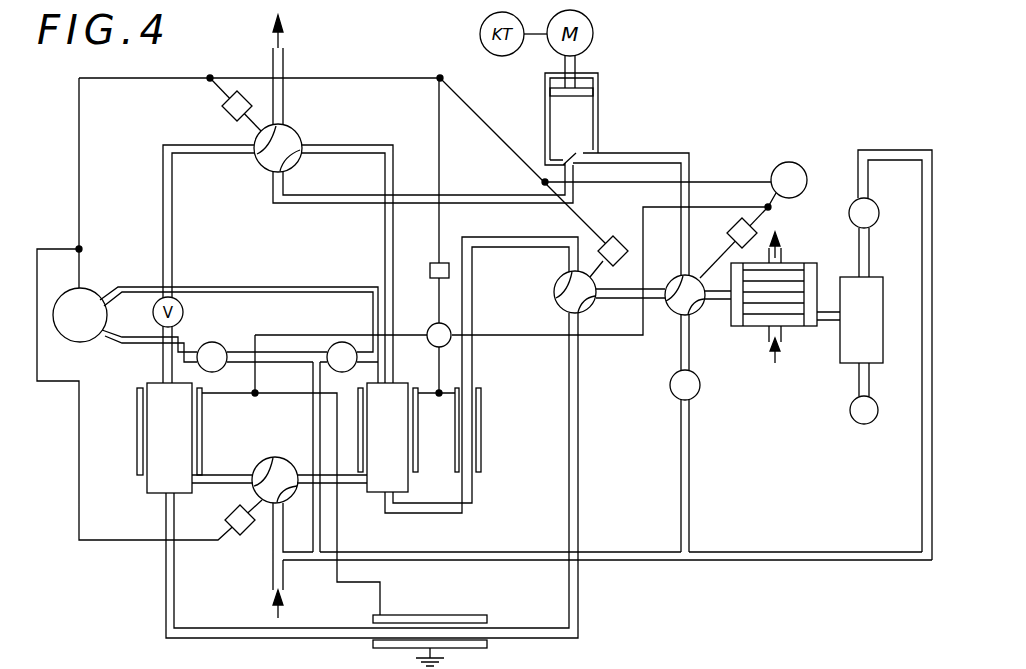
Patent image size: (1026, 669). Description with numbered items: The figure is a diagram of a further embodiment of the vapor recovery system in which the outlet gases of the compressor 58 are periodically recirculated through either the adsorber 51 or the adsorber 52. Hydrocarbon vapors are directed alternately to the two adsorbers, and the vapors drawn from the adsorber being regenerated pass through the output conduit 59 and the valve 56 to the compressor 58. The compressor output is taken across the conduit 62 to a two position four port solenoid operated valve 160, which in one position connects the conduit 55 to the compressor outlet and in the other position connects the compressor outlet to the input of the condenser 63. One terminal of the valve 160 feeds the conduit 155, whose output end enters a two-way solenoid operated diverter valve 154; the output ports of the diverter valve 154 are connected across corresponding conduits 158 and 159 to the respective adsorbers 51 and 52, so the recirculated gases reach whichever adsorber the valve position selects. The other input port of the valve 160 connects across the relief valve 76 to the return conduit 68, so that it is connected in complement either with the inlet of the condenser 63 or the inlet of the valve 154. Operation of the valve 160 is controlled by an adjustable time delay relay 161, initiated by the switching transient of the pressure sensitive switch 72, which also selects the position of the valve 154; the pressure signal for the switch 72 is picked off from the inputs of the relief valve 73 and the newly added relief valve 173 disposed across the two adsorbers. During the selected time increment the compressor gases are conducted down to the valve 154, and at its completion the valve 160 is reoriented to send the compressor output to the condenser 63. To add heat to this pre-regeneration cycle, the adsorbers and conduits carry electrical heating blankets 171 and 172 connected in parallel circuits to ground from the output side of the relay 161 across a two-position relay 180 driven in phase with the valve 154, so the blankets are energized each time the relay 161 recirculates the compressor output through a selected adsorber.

The adsorber 51 is at (148, 489).
The adsorber 52 is at (409, 487).
The conduit 55 is at (287, 98).
The valve 56 is at (262, 166).
The compressor 58 is at (600, 106).
The output conduit 59 is at (333, 206).
The conduit 62 is at (656, 152).
The condenser 63 is at (800, 327).
The return conduit 68 is at (758, 551).
The pressure sensitive switch 72 is at (96, 288).
The relief valve 73 is at (214, 342).
The relief valve 76 is at (701, 386).
The two-way solenoid operated diverter valve 154 is at (556, 300).
The conduit 155 is at (624, 299).
The conduit 158 is at (579, 455).
The conduit 159 is at (478, 352).
The two position four port solenoid operated valve 160 is at (700, 313).
The time delay relay 161 is at (815, 146).
The electrical heating blanket 171 is at (204, 441).
The electrical heating blanket 172 is at (458, 441).
The relief valve 173 is at (343, 342).
The two-position relay 180 is at (428, 330).